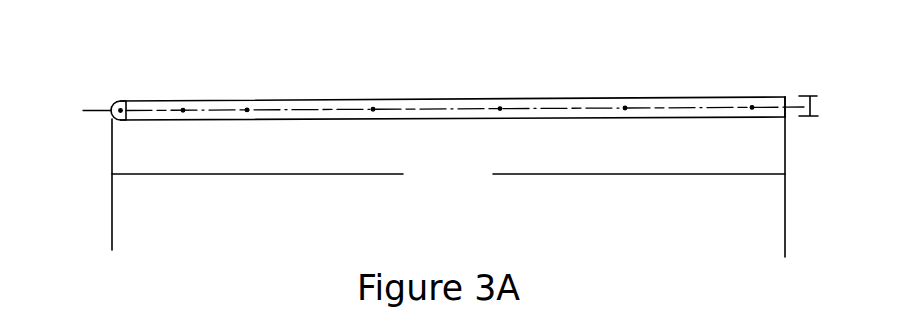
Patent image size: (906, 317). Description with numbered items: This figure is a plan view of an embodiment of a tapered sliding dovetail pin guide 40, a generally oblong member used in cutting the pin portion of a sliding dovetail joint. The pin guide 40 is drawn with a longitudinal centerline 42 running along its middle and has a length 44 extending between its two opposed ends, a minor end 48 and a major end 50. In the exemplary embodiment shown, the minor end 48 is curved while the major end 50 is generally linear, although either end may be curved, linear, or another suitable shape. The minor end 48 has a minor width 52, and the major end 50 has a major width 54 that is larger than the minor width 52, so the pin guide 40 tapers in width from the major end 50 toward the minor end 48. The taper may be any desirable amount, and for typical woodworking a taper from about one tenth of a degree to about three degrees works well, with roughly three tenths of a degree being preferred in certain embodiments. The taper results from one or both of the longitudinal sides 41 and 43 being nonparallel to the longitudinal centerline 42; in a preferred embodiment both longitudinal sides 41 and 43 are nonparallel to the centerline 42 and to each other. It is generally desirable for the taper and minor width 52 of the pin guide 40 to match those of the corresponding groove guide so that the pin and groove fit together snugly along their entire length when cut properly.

The tapered sliding dovetail pin guide 40 is at (453, 114).
The longitudinal side 41 is at (528, 98).
The longitudinal centerline 42 is at (287, 110).
The longitudinal side 43 is at (538, 117).
The length 44 is at (448, 173).
The minor end 48 is at (109, 105).
The major end 50 is at (743, 97).
The minor width 52 is at (127, 103).
The major width 54 is at (815, 107).